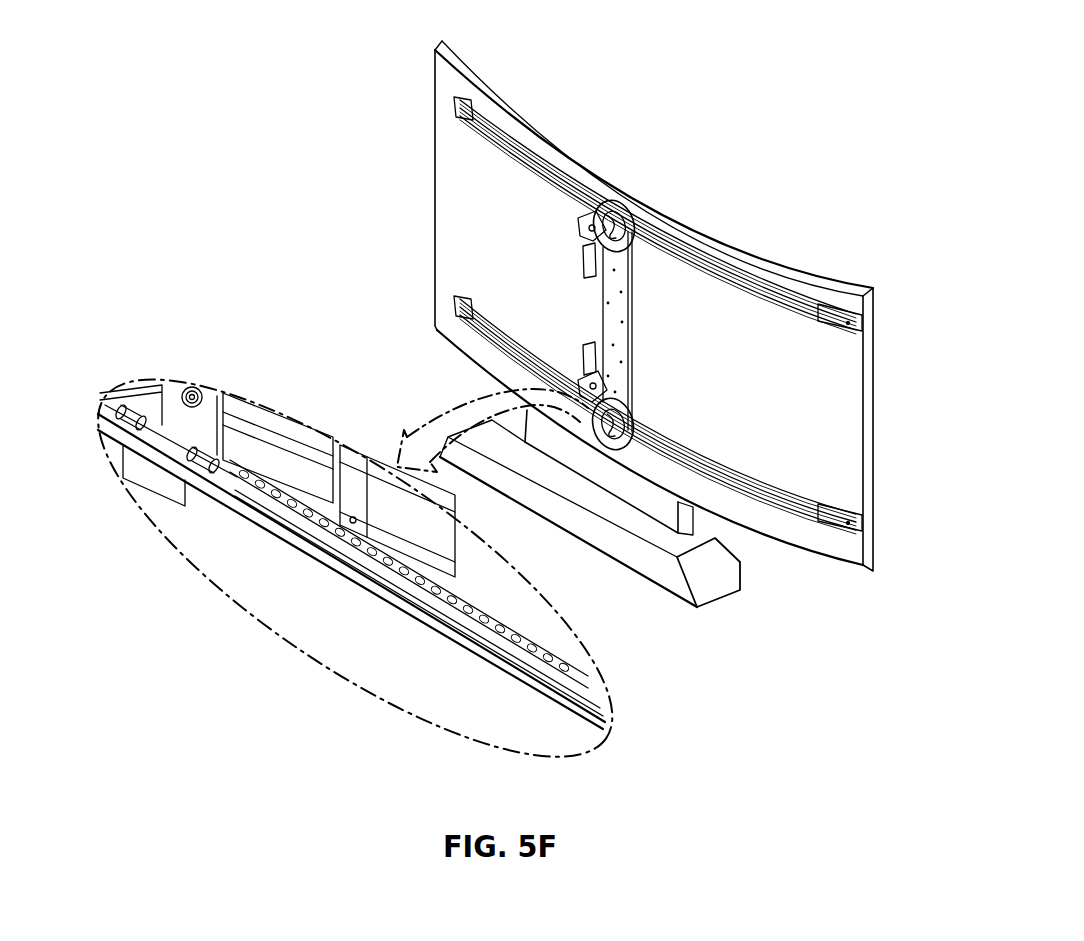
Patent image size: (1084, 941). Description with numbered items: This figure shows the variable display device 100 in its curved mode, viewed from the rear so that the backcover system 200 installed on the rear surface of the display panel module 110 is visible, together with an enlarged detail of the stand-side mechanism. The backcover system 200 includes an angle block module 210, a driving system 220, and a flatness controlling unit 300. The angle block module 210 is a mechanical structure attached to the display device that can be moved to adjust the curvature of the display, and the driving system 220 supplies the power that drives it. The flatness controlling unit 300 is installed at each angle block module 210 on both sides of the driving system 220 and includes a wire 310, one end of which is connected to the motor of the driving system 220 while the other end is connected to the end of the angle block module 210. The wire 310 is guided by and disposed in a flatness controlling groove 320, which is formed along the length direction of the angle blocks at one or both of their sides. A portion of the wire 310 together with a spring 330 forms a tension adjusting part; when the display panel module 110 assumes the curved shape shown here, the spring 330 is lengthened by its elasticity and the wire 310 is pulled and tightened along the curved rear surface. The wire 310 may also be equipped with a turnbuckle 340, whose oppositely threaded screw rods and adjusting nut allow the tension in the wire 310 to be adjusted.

The display apparatus 100 is at (808, 210).
The display panel module 110 is at (873, 418).
The backcover system 200 is at (722, 162).
The angle block module 210 is at (670, 233).
The driving system 220 is at (627, 200).
The flatness controlling unit 300 is at (533, 697).
The wire 310 is at (575, 666).
The flatness controlling groove 320 is at (598, 689).
The spring 330 is at (542, 644).
The turnbuckle 340 is at (163, 438).